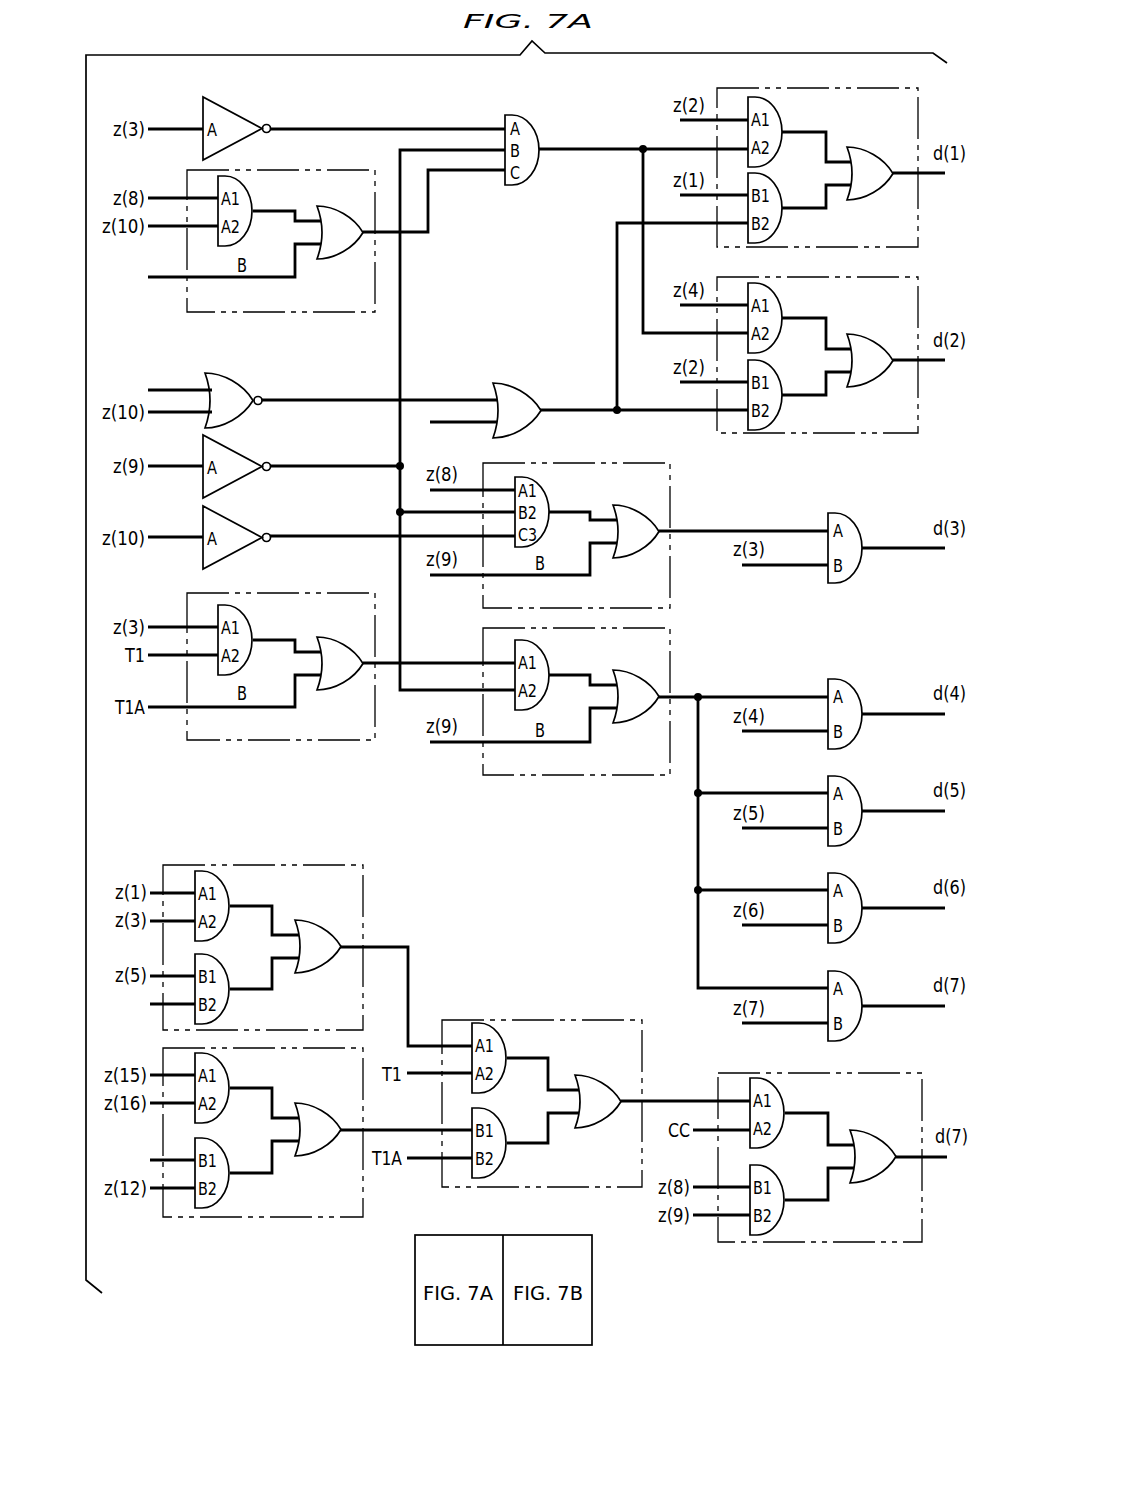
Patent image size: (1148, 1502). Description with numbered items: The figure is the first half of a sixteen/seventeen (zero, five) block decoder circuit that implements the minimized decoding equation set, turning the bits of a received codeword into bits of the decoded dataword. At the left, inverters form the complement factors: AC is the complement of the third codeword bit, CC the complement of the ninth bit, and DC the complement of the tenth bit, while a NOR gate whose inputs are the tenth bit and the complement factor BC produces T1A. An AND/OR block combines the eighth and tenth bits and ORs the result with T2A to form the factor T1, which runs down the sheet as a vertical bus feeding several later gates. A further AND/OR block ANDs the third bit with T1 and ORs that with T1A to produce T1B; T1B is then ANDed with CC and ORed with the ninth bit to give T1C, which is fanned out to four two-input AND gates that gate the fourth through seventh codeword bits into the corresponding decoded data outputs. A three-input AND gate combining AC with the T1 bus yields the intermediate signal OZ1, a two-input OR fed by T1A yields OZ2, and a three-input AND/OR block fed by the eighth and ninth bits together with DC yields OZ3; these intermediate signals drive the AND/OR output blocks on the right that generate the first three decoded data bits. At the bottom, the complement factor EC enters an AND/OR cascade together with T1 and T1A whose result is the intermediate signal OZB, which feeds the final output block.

The complement of codeword bit z(3) AC is at (326, 128).
The first output zone AND gate signal OZ1 is at (626, 150).
The pre-decoded factor T1 is at (439, 420).
The pre-decoded factor T2A is at (217, 266).
The complement of codeword bit z(8) BC is at (167, 390).
The pre-decoded factor T1A is at (351, 400).
The second output zone signal OZ2 is at (589, 330).
The complement of codeword bit z(9) CC is at (276, 466).
The complement of codeword bit z(10) DC is at (331, 537).
The third output zone signal OZ3 is at (720, 530).
The pre-decoded factor T1B is at (439, 649).
The pre-decoded factor T1C is at (720, 828).
The complement of codeword bit z(15) EC is at (160, 1160).
The output zone B signal OZB is at (662, 1100).